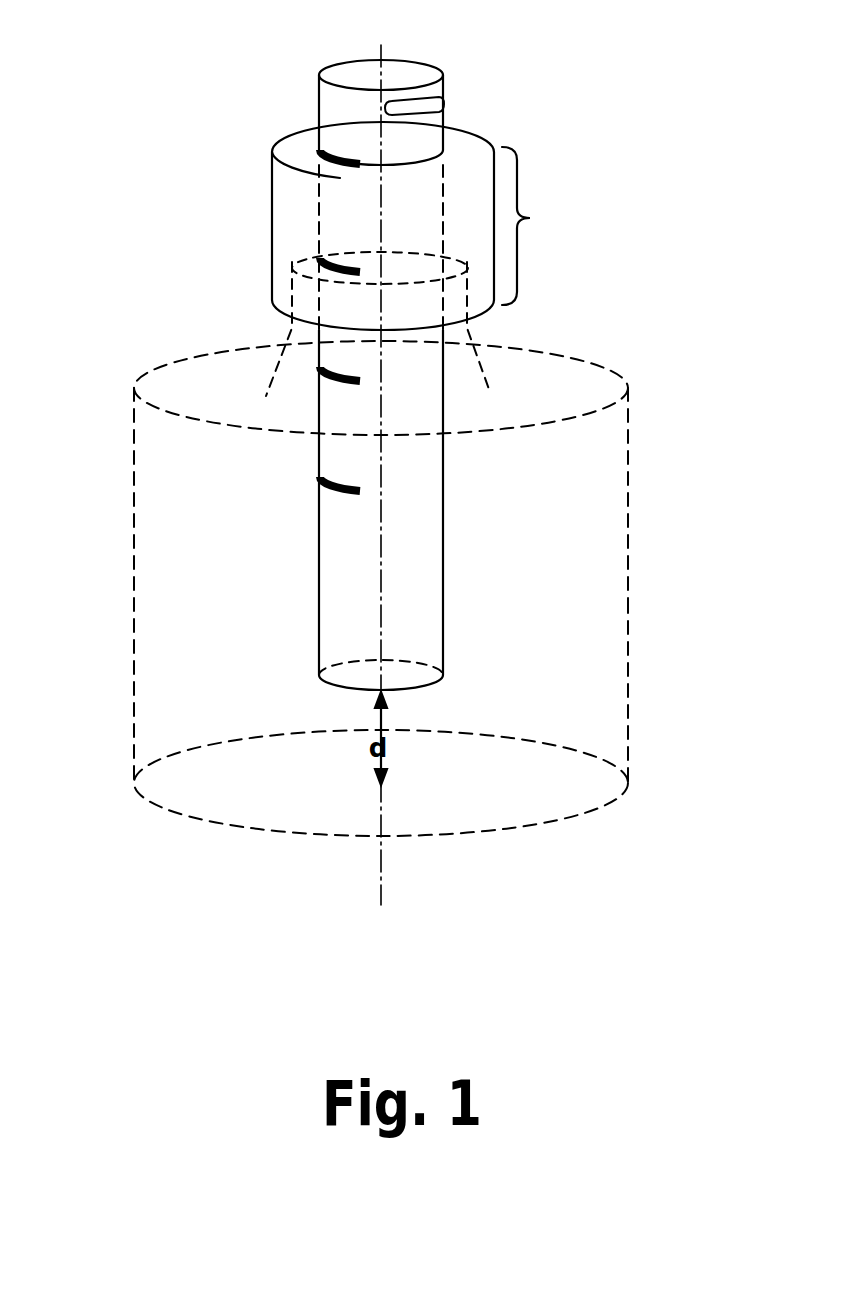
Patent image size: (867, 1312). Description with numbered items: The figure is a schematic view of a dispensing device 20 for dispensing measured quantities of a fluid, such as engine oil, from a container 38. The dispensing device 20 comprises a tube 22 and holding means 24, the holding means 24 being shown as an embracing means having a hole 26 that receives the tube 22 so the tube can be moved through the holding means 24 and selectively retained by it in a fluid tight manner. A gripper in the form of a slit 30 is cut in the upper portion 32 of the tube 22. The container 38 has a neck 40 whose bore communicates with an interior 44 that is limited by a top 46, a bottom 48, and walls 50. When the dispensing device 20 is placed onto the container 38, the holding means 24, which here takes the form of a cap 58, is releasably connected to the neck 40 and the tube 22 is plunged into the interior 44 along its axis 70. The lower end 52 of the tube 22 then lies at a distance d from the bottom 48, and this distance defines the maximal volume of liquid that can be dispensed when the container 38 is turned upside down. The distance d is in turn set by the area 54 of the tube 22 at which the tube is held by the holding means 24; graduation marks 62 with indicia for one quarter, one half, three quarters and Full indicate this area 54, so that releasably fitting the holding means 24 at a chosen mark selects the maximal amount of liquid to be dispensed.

The dispensing device 20 is at (88, 63).
The tube 22 is at (317, 127).
The holding means 24 is at (272, 192).
The hole 26 is at (310, 132).
The slit 30 is at (444, 97).
The upper portion 32 is at (427, 118).
The container 38 is at (628, 645).
The neck 40 is at (290, 252).
The interior 44 is at (612, 578).
The top 46 is at (543, 403).
The bottom 48 is at (470, 830).
The walls 50 is at (132, 522).
The lower end 52 is at (405, 693).
The area 54 is at (540, 226).
The cap 58 is at (270, 147).
The graduation marks 62 is at (317, 145).
The axis 70 is at (377, 863).